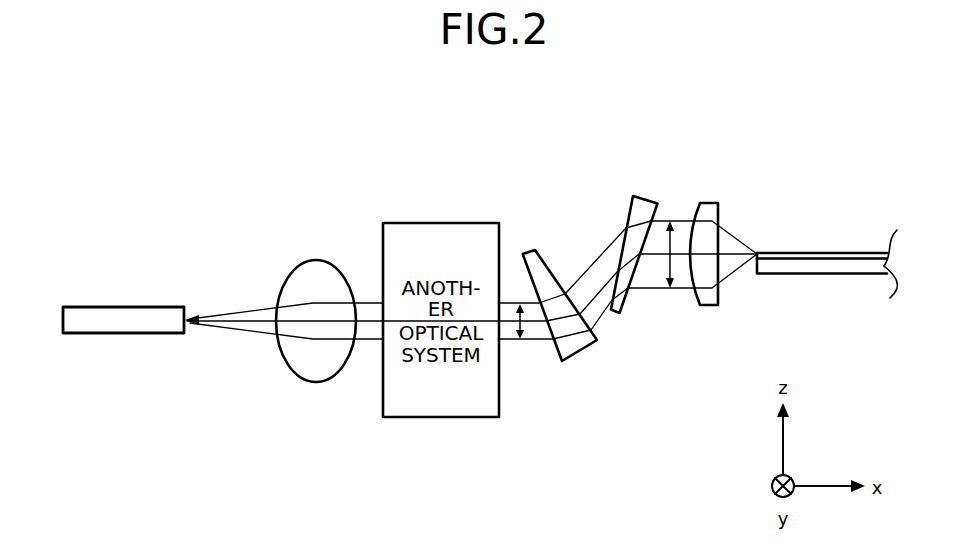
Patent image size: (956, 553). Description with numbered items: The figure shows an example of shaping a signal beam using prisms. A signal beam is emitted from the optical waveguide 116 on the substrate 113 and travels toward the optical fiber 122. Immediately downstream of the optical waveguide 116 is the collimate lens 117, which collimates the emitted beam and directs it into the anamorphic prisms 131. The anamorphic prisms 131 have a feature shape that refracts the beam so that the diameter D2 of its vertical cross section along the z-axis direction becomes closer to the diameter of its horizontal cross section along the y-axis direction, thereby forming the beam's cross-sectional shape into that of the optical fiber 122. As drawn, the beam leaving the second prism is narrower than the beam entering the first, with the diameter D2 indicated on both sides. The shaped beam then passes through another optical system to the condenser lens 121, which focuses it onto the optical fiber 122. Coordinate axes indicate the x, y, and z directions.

The substrate 113 is at (826, 275).
The optical waveguide 116 is at (800, 252).
The collimate lens 117 is at (712, 202).
The condenser lens 121 is at (311, 261).
The optical fiber 122 is at (130, 306).
The anamorphic prisms 131 is at (523, 253).
The diameter of vertical cross section of the signal beam D2 is at (536, 331).